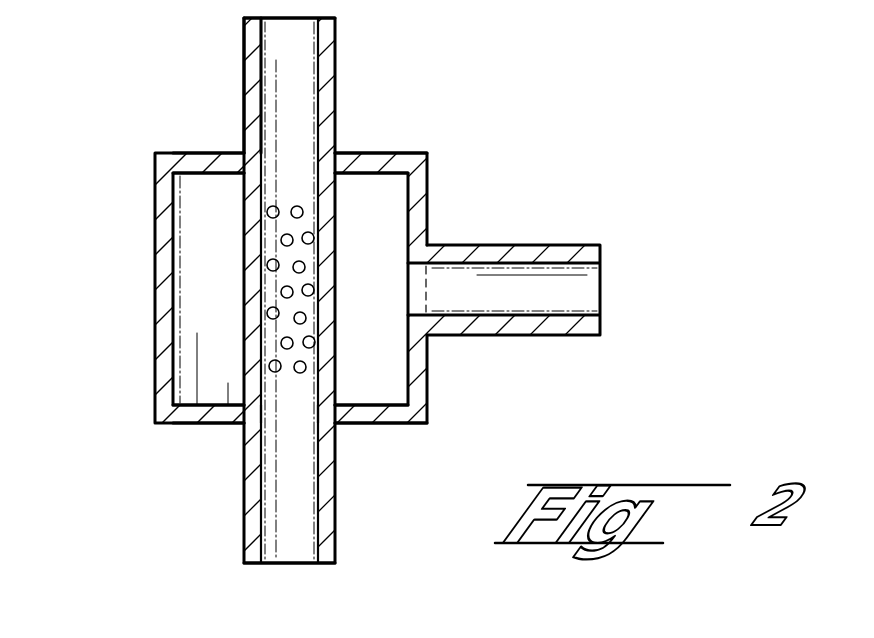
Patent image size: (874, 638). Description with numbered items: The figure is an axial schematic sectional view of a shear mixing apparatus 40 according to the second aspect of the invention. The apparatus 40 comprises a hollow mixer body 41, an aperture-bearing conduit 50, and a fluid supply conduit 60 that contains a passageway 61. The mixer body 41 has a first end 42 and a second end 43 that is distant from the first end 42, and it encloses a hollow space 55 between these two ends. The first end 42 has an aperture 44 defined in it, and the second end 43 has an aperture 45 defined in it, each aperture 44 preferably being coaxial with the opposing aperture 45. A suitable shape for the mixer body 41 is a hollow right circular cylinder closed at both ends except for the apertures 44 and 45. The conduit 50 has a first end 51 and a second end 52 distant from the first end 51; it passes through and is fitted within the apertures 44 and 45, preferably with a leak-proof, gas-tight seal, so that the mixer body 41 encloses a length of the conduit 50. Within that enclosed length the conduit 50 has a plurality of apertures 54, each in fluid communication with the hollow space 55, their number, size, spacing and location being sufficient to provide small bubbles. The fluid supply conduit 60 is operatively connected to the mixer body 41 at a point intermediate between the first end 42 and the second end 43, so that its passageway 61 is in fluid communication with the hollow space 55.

The shear mixing apparatus 40 is at (533, 367).
The mixer body 41 is at (165, 245).
The first end 42 is at (202, 413).
The second end 43 is at (353, 160).
The aperture 44 is at (333, 410).
The aperture 45 is at (245, 158).
The aperture-bearing conduit 50 is at (250, 200).
The first end 51 is at (321, 563).
The second end 52 is at (322, 15).
The apertures 54 is at (306, 263).
The hollow space 55 is at (213, 352).
The fluid supply conduit 60 is at (493, 253).
The passageway 61 is at (548, 298).